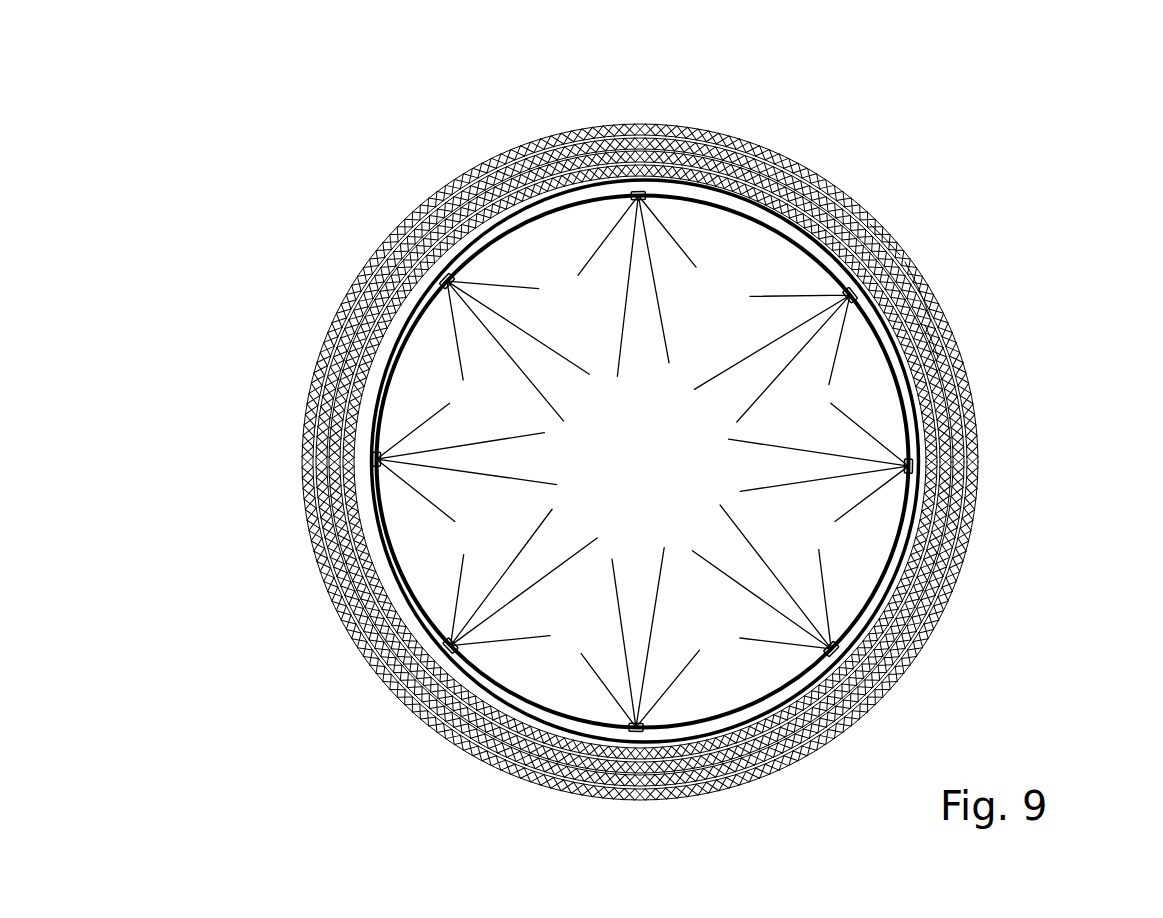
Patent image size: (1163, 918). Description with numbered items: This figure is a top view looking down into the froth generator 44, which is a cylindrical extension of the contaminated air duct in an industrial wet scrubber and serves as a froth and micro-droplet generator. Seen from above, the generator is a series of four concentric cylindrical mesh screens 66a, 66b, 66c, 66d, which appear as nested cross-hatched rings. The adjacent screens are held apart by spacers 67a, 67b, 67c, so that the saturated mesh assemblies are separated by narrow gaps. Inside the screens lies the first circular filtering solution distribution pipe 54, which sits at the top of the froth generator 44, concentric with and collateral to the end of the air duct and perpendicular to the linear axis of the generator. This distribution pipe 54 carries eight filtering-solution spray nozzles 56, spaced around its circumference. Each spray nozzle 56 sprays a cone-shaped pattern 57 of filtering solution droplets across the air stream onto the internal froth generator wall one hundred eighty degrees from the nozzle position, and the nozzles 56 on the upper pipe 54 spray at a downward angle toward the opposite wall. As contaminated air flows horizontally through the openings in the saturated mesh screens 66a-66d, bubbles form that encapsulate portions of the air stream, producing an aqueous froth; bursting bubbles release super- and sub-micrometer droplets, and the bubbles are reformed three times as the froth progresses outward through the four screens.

The froth generator 44 is at (905, 103).
The first circular filtering solution distribution pipe 54 is at (400, 330).
The filtering-solution spray nozzles 56 is at (451, 646).
The cone-shaped pattern of filtering solution droplets 57 is at (850, 641).
The first concentric cylindrical mesh screen 66a is at (933, 505).
The second concentric cylindrical mesh screen 66b is at (953, 468).
The third concentric cylindrical mesh screen 66c is at (977, 413).
The fourth concentric cylindrical mesh screen 66d is at (968, 437).
The first spacer 67a is at (975, 301).
The second spacer 67b is at (938, 357).
The third spacer 67c is at (950, 262).